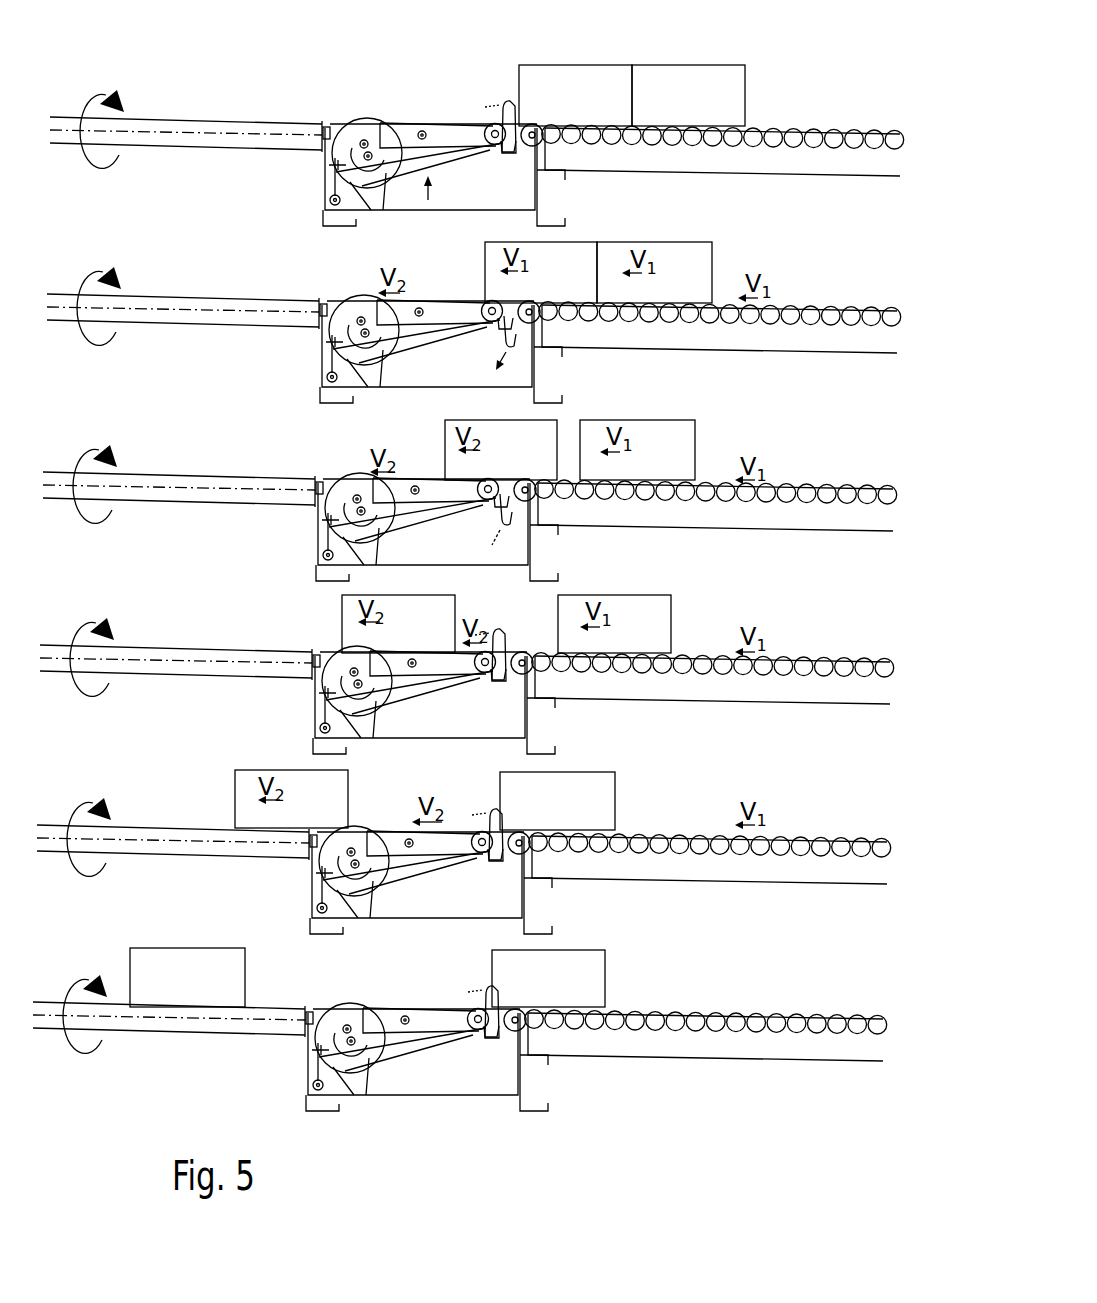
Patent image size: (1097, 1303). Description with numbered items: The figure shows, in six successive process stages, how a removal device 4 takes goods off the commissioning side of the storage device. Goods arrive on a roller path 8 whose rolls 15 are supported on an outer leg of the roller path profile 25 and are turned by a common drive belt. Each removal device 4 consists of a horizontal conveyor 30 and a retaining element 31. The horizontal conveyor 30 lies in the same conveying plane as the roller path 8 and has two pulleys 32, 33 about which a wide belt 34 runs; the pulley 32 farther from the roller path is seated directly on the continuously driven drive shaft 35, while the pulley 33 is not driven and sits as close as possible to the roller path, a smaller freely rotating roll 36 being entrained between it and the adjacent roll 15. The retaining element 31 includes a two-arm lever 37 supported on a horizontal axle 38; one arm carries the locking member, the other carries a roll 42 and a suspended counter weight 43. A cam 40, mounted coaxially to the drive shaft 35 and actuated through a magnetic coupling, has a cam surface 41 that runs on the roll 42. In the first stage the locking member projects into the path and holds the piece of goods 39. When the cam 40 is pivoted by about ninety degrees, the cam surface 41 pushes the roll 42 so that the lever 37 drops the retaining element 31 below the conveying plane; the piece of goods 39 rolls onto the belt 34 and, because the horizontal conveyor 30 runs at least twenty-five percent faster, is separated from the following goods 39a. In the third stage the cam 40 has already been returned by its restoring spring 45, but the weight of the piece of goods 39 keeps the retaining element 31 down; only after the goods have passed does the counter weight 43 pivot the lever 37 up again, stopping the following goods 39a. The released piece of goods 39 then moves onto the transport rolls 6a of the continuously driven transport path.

The removal device 4 is at (421, 617).
The transport rolls 6a is at (218, 120).
The roller path 8 is at (714, 557).
The rolls 15 is at (550, 140).
The roller path profile 25 is at (745, 162).
The horizontal conveyor 30 is at (437, 212).
The retaining element 31 is at (507, 86).
The pulley 32 is at (362, 140).
The pulley 33 is at (500, 100).
The belt 34 is at (372, 190).
The drive shaft 35 is at (365, 162).
The freely rotating roll 36 is at (527, 152).
The lever 37 is at (470, 148).
The horizontal axle 38 is at (428, 142).
The piece of goods 39 is at (578, 70).
The following goods 39a is at (690, 70).
The cam 40 is at (388, 165).
The cam surface 41 is at (388, 175).
The roll 42 is at (350, 150).
The counter weight 43 is at (325, 200).
The restoring spring 45 is at (330, 357).